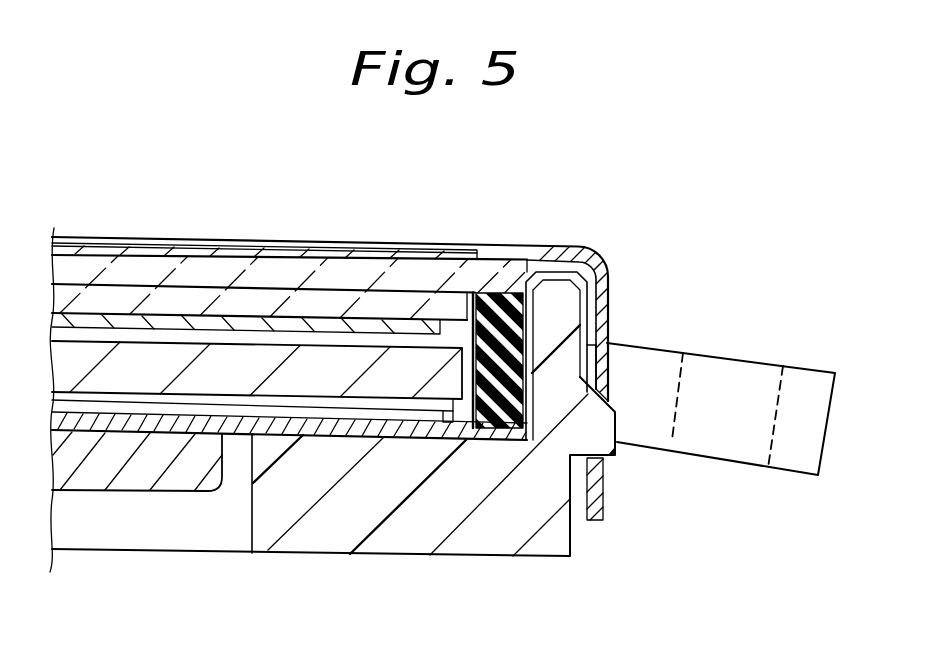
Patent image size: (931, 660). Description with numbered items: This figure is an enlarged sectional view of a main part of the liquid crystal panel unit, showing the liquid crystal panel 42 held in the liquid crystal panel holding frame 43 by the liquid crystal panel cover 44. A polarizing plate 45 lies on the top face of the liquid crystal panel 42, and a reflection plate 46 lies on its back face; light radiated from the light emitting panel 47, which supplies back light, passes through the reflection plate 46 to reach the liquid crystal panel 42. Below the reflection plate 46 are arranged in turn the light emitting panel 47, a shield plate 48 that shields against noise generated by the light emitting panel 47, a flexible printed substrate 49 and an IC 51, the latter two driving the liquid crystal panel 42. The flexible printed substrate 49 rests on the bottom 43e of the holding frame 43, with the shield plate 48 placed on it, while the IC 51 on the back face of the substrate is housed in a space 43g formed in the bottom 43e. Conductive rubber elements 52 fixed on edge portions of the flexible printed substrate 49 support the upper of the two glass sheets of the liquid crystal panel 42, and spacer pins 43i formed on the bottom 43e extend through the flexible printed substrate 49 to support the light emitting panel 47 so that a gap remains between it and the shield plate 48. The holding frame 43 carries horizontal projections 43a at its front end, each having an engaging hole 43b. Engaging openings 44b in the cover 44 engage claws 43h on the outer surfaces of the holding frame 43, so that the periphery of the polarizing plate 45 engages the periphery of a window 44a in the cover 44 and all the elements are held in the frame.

The liquid crystal panel 42 is at (350, 248).
The liquid crystal panel holding frame 43 is at (333, 560).
The horizontal projections 43a is at (653, 365).
The engaging hole 43b is at (743, 377).
The bottom 43e is at (415, 528).
The space 43g is at (205, 530).
The claws 43h is at (620, 453).
The spacer pins 43i is at (446, 413).
The liquid crystal panel cover 44 is at (577, 245).
The window 44a is at (452, 250).
The engaging openings 44b is at (600, 372).
The polarizing plate 45 is at (293, 242).
The reflection plate 46 is at (373, 327).
The light emitting panel 47 is at (158, 367).
The shield plate 48 is at (208, 400).
The flexible printed substrate 49 is at (75, 420).
The IC 51 is at (112, 463).
The conductive rubber elements 52 is at (499, 315).